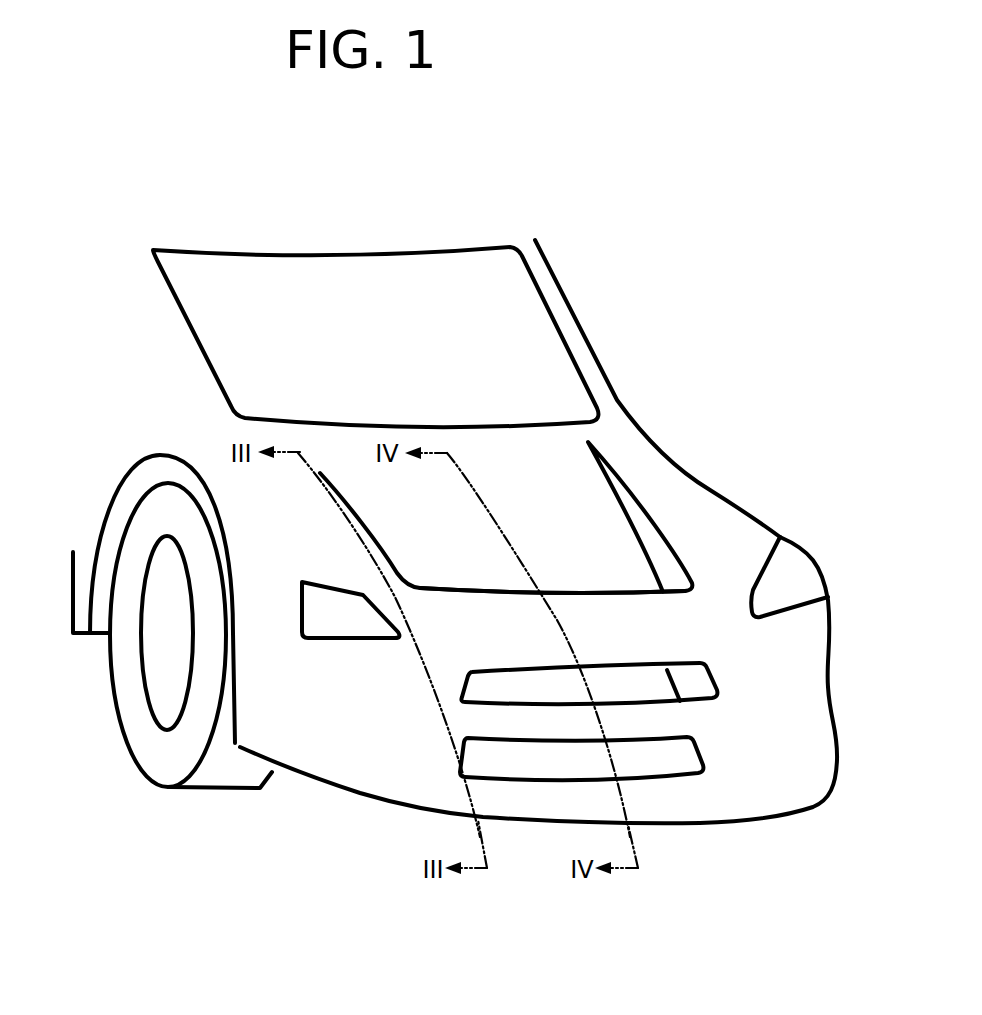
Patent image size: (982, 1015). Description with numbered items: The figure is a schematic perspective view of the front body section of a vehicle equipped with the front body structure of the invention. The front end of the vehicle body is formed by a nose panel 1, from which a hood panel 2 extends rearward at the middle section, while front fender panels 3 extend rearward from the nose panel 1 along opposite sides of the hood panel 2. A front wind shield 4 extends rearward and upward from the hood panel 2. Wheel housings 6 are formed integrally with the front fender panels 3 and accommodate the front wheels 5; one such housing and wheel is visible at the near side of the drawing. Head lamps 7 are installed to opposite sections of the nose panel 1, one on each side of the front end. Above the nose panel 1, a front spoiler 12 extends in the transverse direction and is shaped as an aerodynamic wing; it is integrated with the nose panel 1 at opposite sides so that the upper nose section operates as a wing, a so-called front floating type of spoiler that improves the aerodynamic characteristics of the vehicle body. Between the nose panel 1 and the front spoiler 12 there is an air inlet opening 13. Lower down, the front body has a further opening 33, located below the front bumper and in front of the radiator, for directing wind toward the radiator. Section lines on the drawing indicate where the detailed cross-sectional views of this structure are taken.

The nose panel 1 is at (637, 717).
The hood panel 2 is at (625, 517).
The front fender panels 3 is at (722, 513).
The front wind shield 4 is at (403, 361).
The front wheels 5 is at (140, 748).
The wheel housings 6 is at (107, 508).
The head lamps 7 is at (342, 627).
The front spoiler 12 is at (493, 603).
The air inlet opening 13 is at (603, 682).
The opening 33 is at (650, 768).